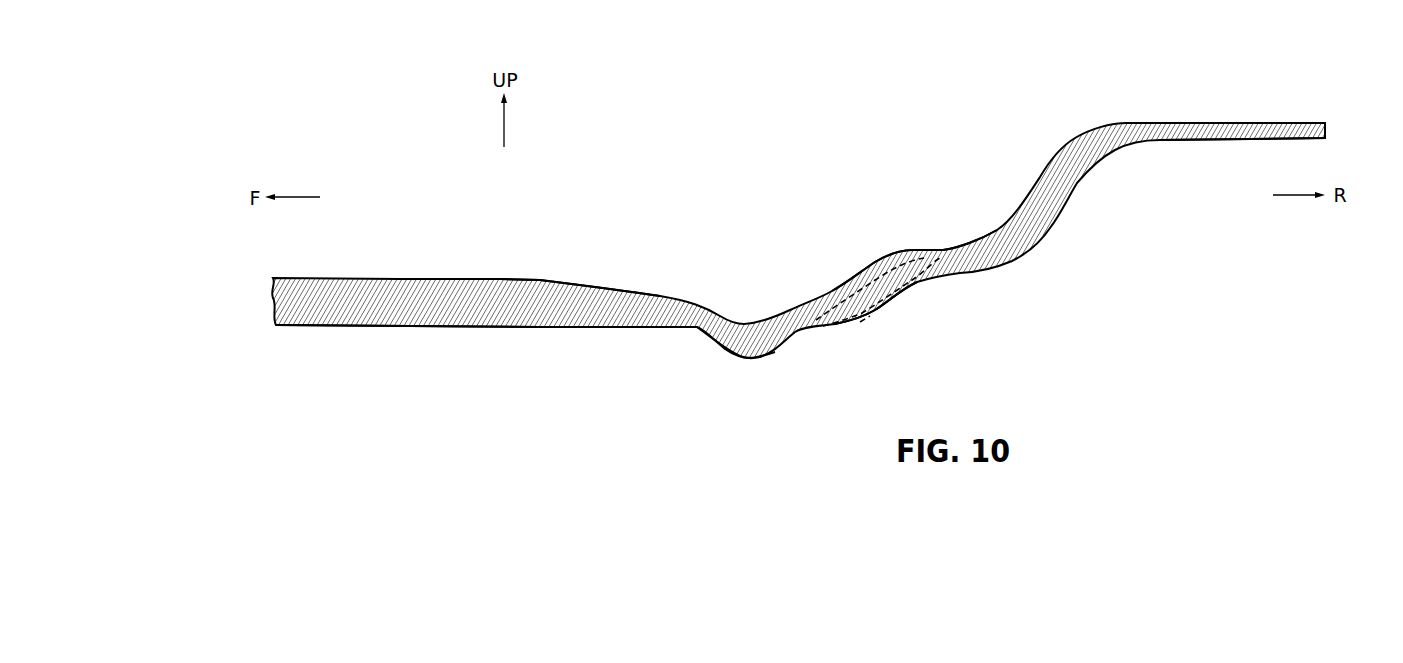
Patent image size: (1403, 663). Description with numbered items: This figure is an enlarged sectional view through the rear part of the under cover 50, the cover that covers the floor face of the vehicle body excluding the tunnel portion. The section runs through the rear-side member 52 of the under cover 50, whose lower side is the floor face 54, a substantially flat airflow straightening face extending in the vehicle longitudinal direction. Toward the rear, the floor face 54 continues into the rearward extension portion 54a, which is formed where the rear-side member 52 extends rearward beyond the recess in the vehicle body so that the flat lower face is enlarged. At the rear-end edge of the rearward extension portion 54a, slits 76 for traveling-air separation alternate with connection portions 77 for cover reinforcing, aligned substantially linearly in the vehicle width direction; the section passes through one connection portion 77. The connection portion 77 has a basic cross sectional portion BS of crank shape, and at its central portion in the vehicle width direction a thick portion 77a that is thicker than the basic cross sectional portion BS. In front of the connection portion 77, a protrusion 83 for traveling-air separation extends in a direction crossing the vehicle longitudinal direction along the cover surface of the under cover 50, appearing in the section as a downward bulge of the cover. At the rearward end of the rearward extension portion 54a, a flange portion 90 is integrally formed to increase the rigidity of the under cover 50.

The under cover 50 is at (445, 253).
The rear-side member 52 is at (508, 267).
The floor face 54 is at (337, 327).
The rearward extension portion 54a is at (944, 211).
The slit 76 is at (830, 297).
The connection portion 77 is at (877, 272).
The thick portion 77a is at (897, 303).
The protrusion 83 is at (748, 362).
The basic cross sectional portion BS is at (868, 330).
The flange portion 90 is at (1220, 123).